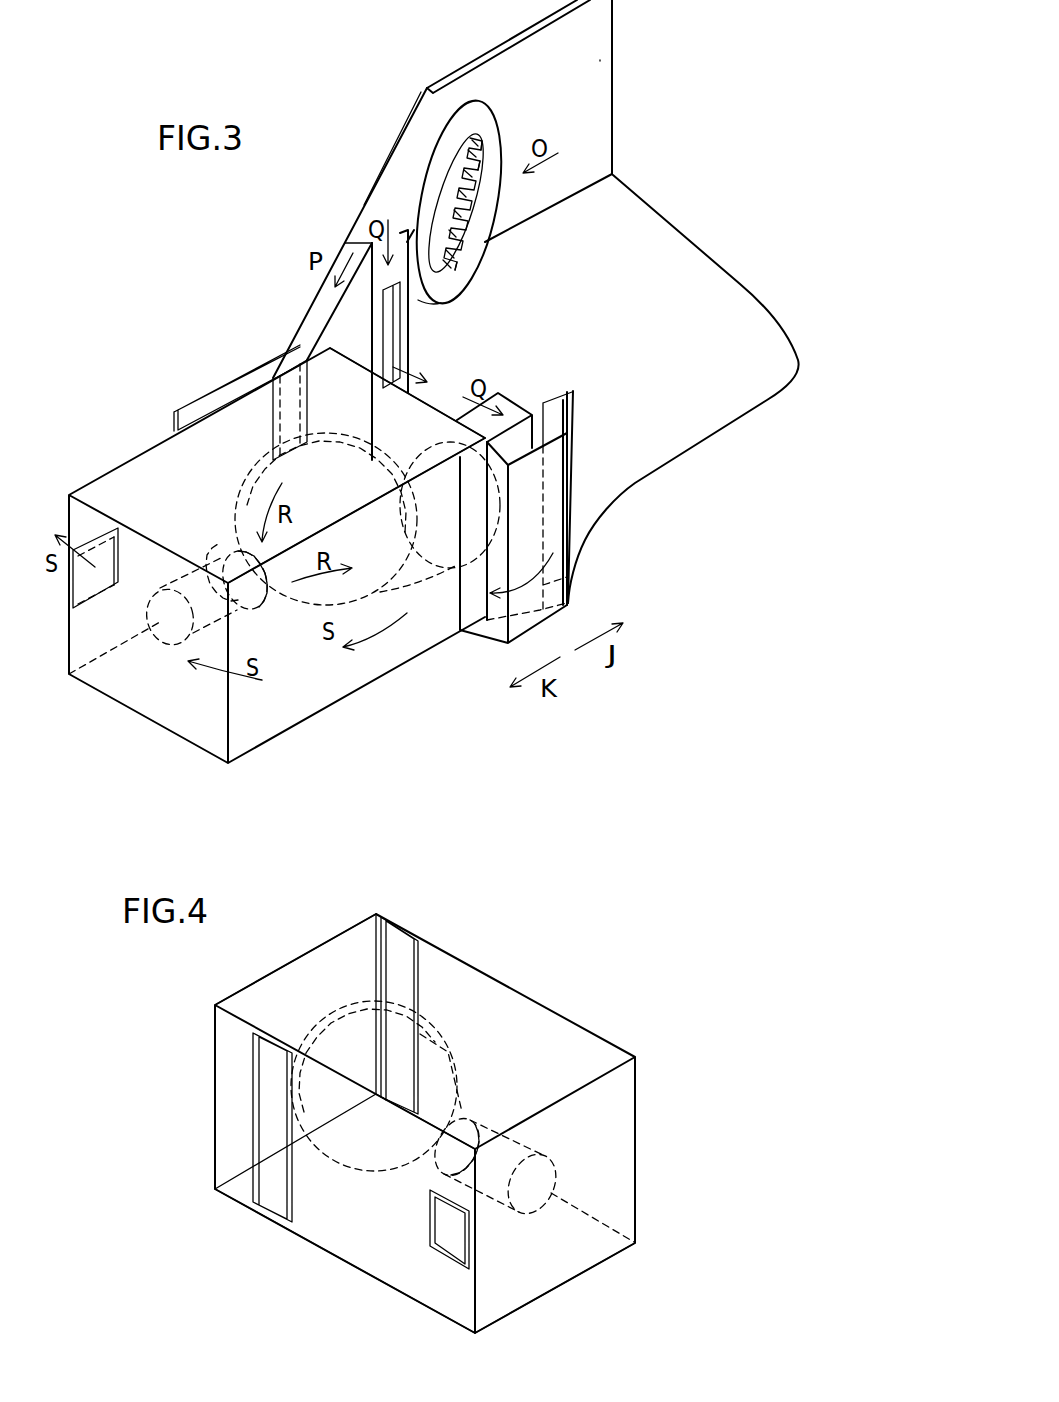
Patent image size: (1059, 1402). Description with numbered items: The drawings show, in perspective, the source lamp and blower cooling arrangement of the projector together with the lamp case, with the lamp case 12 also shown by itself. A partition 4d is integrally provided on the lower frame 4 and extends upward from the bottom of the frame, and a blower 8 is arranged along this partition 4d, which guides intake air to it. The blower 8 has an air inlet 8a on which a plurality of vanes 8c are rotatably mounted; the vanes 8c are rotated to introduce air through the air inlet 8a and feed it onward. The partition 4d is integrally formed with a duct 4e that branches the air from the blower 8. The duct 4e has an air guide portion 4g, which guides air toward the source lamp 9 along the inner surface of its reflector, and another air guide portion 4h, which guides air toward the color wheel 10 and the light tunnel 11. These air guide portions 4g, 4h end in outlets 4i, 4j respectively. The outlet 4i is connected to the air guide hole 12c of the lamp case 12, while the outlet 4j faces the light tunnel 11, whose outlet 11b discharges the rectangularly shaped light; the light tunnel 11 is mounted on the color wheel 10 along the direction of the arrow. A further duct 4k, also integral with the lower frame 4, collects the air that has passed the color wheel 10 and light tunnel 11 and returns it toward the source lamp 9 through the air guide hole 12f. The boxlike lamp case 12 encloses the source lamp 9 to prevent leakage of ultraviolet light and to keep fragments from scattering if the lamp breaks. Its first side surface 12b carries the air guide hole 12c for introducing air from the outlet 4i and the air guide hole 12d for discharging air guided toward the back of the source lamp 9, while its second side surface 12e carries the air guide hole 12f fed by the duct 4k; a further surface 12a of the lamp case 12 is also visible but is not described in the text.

In FIG. 3, the lower frame 4 is at (626, 243).
In FIG. 3, the partition 4d is at (575, 105).
In FIG. 3, the duct 4e is at (362, 230).
In FIG. 3, the air guide portion 4g is at (320, 313).
In FIG. 3, the air guide portion 4h is at (441, 303).
In FIG. 3, the outlet 4i is at (277, 377).
In FIG. 3, the outlet 4j is at (393, 333).
In FIG. 3, the duct 4k is at (556, 515).
In FIG. 3, the blower 8 is at (427, 135).
In FIG. 3, the air inlet 8a is at (454, 202).
In FIG. 3, the vanes 8c is at (485, 177).
In FIG. 3, the source lamp 9 is at (283, 590).
In FIG. 4, the source lamp 9 is at (448, 1052).
In FIG. 3, the color wheel 10 is at (438, 560).
In FIG. 3, the light tunnel 11 is at (503, 390).
In FIG. 3, the outlet 11b is at (567, 394).
In FIG. 3, the lamp case 12 is at (163, 702).
In FIG. 4, the lamp case 12 is at (533, 1259).
In FIG. 3, the top face of housing 12a is at (430, 403).
In FIG. 4, the top face of housing 12a is at (284, 965).
In FIG. 4, the first side surface 12b is at (351, 1231).
In FIG. 3, the air guide hole 12c is at (253, 427).
In FIG. 4, the air guide hole 12c is at (258, 1216).
In FIG. 3, the air guide hole 12d is at (75, 595).
In FIG. 4, the air guide hole 12d is at (433, 1256).
In FIG. 3, the second side surface 12e is at (343, 677).
In FIG. 4, the second side surface 12e is at (507, 985).
In FIG. 4, the air guide hole 12f is at (422, 948).